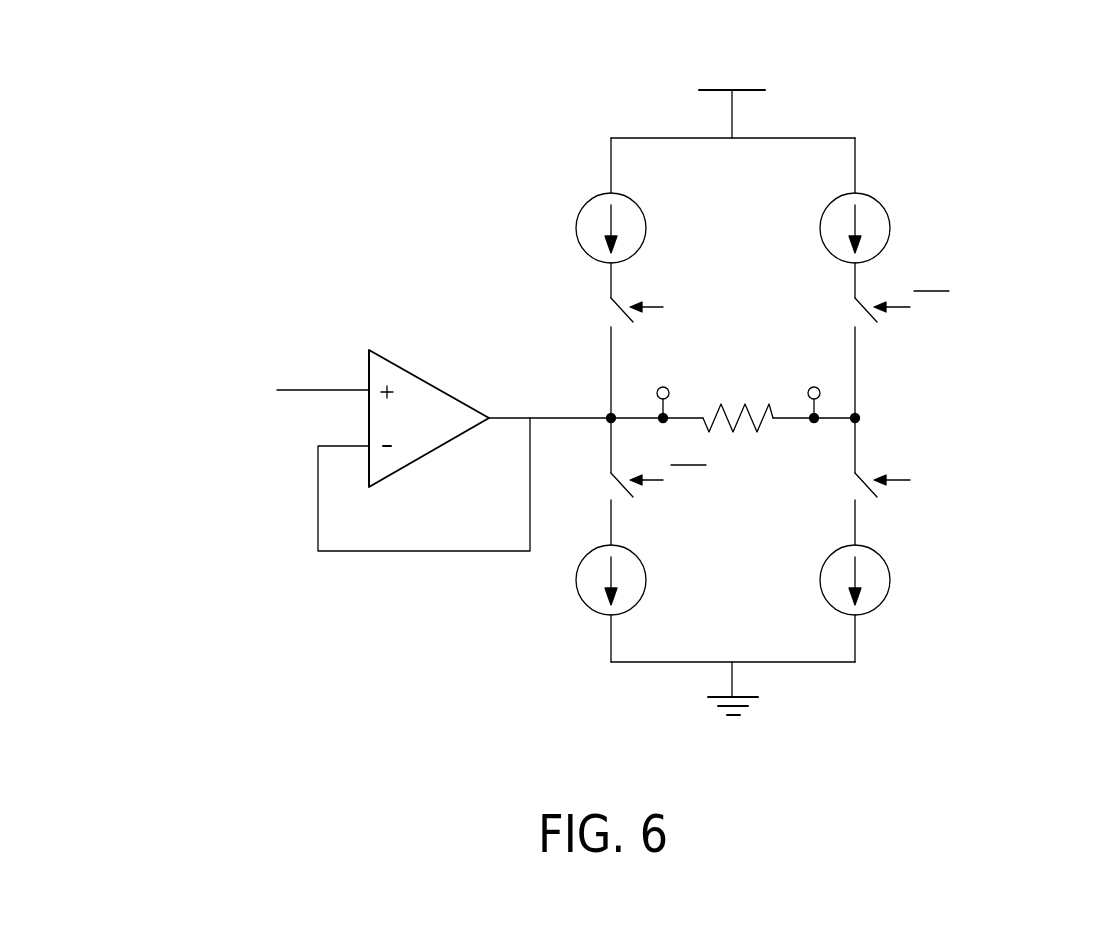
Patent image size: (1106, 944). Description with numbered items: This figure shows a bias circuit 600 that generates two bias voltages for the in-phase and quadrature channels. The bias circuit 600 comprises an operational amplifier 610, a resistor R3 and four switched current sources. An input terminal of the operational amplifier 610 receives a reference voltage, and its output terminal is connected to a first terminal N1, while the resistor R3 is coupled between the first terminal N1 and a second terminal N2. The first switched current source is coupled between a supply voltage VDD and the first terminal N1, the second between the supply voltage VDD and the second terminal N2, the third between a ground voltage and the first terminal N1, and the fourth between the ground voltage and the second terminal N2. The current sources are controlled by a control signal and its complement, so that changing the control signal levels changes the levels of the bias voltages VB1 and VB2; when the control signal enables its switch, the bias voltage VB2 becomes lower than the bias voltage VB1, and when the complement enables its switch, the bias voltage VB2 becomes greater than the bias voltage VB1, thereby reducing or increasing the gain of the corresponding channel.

The bias circuit 600 is at (972, 115).
The operational amplifier 610 is at (433, 382).
The resistor R3 is at (741, 437).
The first terminal N1 is at (595, 405).
The second terminal N2 is at (876, 421).
The bias voltage VB1 is at (660, 388).
The bias voltage VB2 is at (812, 388).
The supply voltage VDD is at (732, 96).